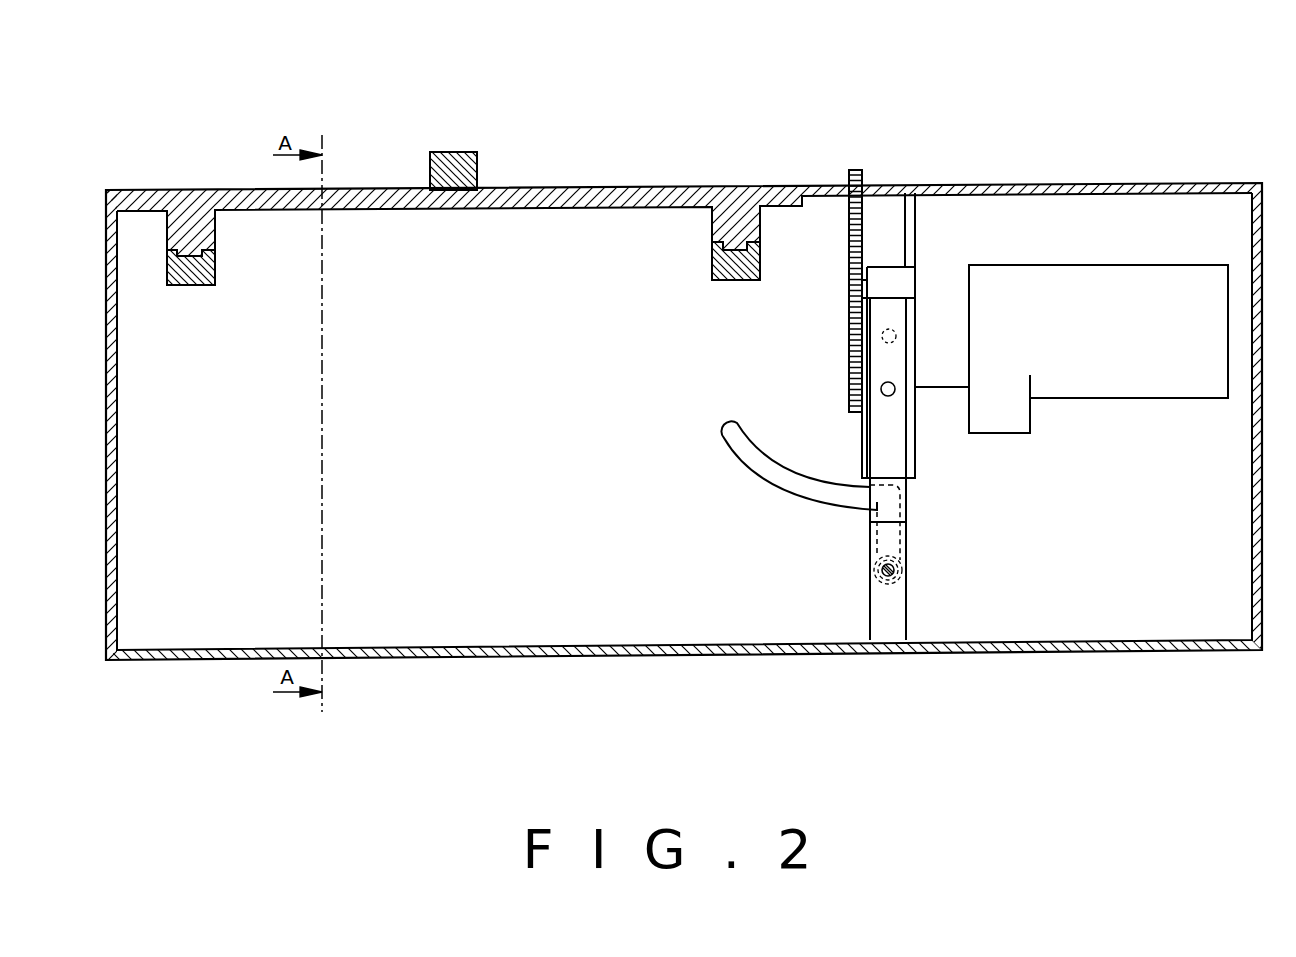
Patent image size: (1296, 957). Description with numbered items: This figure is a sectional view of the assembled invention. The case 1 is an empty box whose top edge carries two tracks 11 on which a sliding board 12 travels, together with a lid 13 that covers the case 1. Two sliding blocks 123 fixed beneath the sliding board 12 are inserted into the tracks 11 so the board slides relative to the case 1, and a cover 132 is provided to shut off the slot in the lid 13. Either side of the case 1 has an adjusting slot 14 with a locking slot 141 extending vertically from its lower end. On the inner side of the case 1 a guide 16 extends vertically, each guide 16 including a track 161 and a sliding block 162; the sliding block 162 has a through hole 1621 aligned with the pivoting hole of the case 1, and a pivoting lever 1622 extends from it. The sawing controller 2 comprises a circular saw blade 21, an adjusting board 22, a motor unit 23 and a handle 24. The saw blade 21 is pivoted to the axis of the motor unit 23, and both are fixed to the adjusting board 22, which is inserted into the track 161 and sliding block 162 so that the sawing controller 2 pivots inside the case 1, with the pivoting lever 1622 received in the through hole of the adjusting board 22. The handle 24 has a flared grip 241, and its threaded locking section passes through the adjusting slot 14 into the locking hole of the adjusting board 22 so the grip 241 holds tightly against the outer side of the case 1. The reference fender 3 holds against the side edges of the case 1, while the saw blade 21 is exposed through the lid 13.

The case 1 is at (1208, 643).
The sawing controller 2 is at (876, 465).
The reference fender 3 is at (472, 152).
The tracks 11 is at (762, 240).
The sliding board 12 is at (608, 188).
The lid 13 is at (1196, 186).
The adjusting slot 14 is at (785, 477).
The guides 16 is at (939, 249).
The circular saw blade 21 is at (849, 285).
The adjusting board 22 is at (900, 613).
The motor unit 23 is at (1085, 285).
The handle 24 is at (888, 578).
The sliding blocks 123 is at (735, 227).
The cover 132 is at (897, 248).
The locking slot 141 is at (908, 520).
The track 161 is at (908, 232).
The sliding block 162 is at (910, 332).
The grip 241 is at (840, 641).
The through hole 1621 is at (887, 382).
The pivoting lever 1622 is at (889, 329).